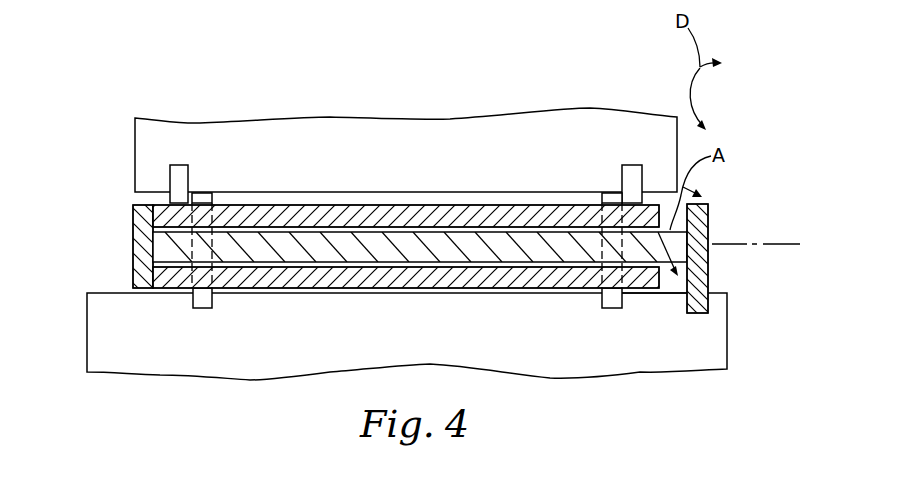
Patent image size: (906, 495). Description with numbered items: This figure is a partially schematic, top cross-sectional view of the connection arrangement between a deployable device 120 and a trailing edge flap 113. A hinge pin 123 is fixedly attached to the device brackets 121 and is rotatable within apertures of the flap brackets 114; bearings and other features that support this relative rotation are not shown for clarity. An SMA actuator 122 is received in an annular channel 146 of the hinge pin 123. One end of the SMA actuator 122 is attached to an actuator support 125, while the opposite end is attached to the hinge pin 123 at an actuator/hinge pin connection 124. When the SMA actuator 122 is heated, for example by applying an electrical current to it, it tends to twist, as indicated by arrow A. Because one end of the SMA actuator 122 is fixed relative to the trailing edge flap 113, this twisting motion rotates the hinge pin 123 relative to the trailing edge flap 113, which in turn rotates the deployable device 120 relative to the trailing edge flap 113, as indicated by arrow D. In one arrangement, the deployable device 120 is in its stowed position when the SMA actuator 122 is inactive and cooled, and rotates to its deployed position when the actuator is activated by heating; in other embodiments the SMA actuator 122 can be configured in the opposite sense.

The trailing edge flap 113 is at (670, 352).
The flap brackets 114 is at (197, 304).
The deployable device 120 is at (623, 130).
The device brackets 121 is at (178, 176).
The SMA actuator 122 is at (543, 266).
The hinge pin 123 is at (411, 281).
The actuator/hinge pin connection 124 is at (153, 245).
The actuator support 125 is at (710, 224).
The annular channel 146 is at (638, 290).